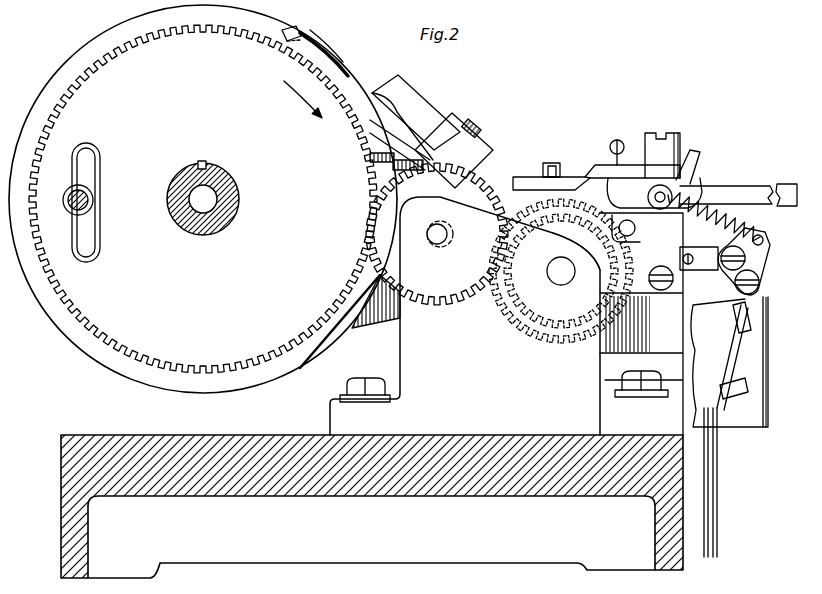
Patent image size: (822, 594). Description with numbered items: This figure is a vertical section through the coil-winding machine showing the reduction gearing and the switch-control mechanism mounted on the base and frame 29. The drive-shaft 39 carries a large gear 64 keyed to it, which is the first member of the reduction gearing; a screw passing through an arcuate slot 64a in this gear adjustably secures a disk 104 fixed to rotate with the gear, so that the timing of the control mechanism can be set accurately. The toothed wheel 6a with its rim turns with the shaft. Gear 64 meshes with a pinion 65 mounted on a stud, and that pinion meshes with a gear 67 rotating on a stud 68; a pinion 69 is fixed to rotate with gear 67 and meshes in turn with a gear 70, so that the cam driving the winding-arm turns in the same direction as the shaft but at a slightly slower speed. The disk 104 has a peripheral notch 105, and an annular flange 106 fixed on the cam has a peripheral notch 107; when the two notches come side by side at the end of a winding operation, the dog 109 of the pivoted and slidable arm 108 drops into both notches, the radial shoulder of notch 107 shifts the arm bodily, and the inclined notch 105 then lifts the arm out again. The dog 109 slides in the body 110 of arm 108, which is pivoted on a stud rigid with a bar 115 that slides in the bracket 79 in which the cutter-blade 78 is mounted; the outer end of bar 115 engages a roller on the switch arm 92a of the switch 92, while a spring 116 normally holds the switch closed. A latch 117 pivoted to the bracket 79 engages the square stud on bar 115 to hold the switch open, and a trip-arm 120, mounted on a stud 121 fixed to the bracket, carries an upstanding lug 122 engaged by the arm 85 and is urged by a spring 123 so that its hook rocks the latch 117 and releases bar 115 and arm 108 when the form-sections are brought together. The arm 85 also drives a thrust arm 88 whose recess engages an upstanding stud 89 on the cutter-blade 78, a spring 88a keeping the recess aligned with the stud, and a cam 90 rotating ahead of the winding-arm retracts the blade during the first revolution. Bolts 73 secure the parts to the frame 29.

The toothed wheel 6a is at (196, 214).
The base frame 29 is at (458, 436).
The drive-shaft 39 is at (208, 172).
The gear 64 is at (72, 210).
The arcuate slot 64a is at (100, 225).
The pinion 65 is at (478, 178).
The gear 67 is at (515, 325).
The stud 68 is at (562, 280).
The pinion 69 is at (545, 338).
The gear 70 is at (480, 180).
The bolt 73 is at (346, 392).
The cutter-blade 78 is at (755, 190).
The bracket 79 is at (638, 309).
The arm 85 is at (680, 150).
The thrust arm 88 is at (588, 170).
The spring 88a is at (617, 140).
The upstanding stud 89 is at (560, 178).
The cam 90 is at (370, 328).
The switch 92 is at (766, 346).
The switch arm 92a is at (752, 258).
The disk 104 is at (198, 388).
The peripheral notch 105 is at (341, 66).
The annular flange 106 is at (333, 58).
The peripheral notch 107 is at (327, 52).
The arm 108 is at (453, 117).
The dog 109 is at (398, 84).
The body 110 is at (437, 187).
The bar 115 is at (710, 272).
The spring 116 is at (700, 200).
The latch 117 is at (636, 228).
The trip-arm 120 is at (630, 183).
The stud 121 is at (667, 190).
The upstanding lug 122 is at (692, 172).
The spring 123 is at (590, 202).